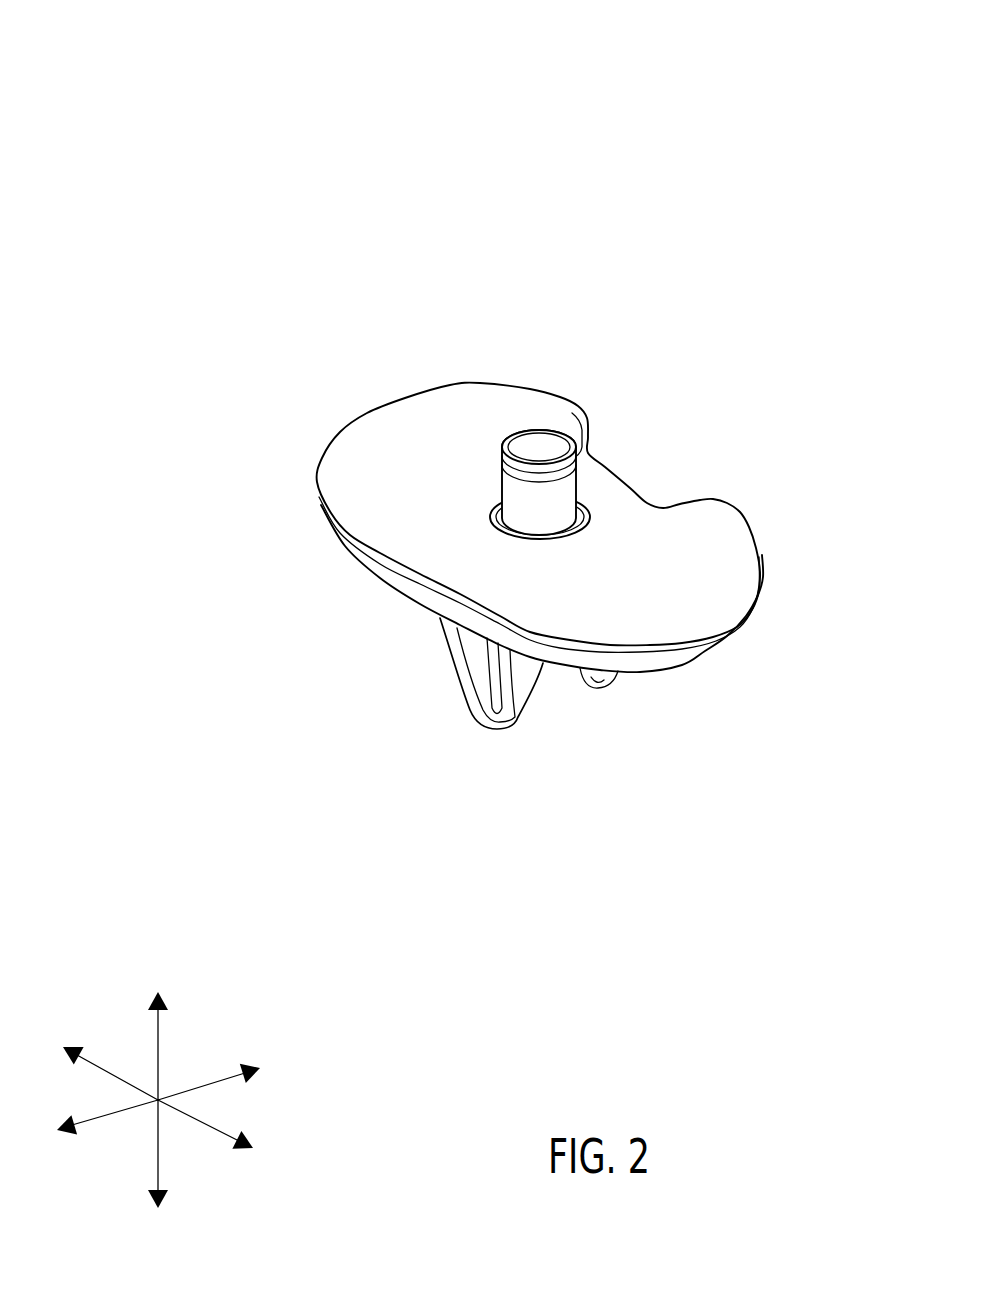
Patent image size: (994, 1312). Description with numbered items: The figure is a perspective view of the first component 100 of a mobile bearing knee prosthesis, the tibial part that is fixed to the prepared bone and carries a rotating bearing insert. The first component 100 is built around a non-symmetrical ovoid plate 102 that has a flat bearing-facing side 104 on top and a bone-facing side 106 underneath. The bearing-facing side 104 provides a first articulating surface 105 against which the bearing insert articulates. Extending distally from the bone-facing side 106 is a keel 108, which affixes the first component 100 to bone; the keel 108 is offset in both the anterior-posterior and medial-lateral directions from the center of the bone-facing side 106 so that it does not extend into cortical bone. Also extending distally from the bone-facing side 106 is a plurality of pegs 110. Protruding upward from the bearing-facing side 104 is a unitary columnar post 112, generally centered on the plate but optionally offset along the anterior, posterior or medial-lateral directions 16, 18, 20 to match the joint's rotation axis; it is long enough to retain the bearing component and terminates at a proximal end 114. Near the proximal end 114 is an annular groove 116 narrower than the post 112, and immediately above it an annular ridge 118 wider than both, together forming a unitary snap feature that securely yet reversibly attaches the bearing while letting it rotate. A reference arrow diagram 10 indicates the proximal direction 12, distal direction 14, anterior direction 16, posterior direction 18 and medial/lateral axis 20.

The first component 100 is at (503, 200).
The non-symmetrical ovoid plate 102 is at (743, 617).
The bearing-facing side 104 is at (660, 548).
The first articulating surface 105 is at (435, 562).
The bone-facing side 106 is at (677, 667).
The keel 108 is at (476, 677).
The pegs 110 is at (598, 683).
The unitary columnar post 112 is at (502, 488).
The proximal end 114 is at (533, 442).
The annular groove 116 is at (527, 504).
The annular ridge 118 is at (503, 443).
The reference arrow diagram 10 is at (113, 955).
The proximal direction 12 is at (160, 1039).
The distal direction 14 is at (158, 1160).
The anterior direction 16 is at (107, 1118).
The posterior direction 18 is at (222, 1073).
The medial/lateral axis 20 is at (116, 1070).